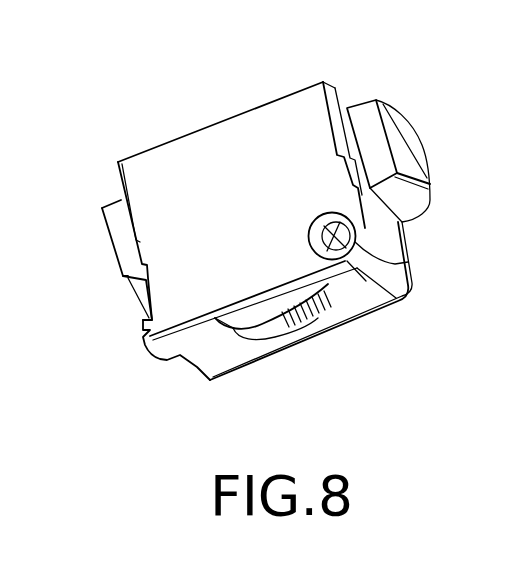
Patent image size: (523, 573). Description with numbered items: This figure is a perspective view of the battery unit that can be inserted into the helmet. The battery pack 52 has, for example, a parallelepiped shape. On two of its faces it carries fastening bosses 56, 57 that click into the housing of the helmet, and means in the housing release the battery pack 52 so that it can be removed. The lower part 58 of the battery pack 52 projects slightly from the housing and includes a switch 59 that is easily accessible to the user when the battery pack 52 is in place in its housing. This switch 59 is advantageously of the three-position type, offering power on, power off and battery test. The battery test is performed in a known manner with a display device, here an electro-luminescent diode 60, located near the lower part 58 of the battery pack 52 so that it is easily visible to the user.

The battery pack 52 is at (172, 102).
The fastening boss 56 is at (118, 244).
The fastening boss 57 is at (378, 155).
The lower part 58 is at (183, 316).
The switch 59 is at (322, 312).
The electro-luminescent diode 60 is at (408, 263).